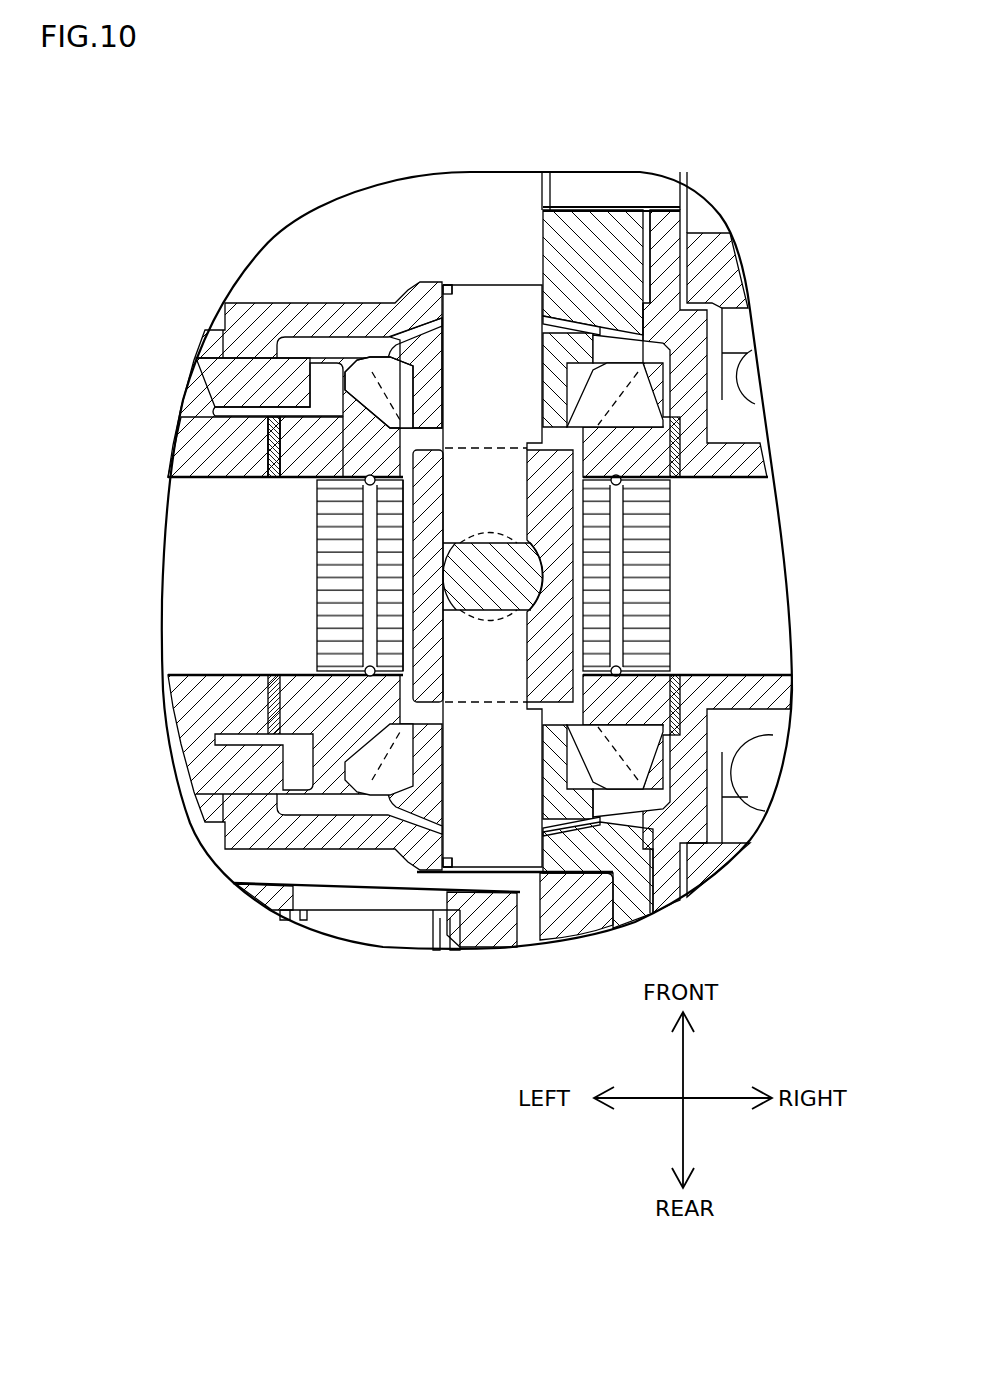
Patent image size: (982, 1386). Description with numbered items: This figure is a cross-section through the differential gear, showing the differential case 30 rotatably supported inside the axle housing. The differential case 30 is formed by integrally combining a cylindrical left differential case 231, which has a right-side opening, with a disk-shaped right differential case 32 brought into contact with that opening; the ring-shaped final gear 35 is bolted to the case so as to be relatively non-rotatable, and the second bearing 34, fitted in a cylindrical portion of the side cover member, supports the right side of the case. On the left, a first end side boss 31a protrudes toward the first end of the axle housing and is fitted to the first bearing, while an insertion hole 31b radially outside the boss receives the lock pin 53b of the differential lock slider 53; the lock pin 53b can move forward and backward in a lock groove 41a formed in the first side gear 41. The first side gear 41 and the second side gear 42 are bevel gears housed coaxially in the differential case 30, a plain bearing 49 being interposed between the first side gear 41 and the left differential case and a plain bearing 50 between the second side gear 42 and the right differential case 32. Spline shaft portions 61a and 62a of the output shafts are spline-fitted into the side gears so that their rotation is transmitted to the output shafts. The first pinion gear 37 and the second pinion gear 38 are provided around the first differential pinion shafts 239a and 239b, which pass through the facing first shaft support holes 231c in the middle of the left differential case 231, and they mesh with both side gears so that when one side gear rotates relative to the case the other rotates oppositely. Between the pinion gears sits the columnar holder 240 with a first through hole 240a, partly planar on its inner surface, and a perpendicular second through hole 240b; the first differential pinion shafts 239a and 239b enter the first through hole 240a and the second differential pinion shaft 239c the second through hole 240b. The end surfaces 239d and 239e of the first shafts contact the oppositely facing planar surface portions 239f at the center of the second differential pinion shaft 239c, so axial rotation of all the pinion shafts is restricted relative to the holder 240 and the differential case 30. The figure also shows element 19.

The connector 19 is at (455, 937).
The differential case 30 is at (803, 232).
The first end side boss 31a is at (190, 438).
The insertion hole 31b is at (268, 357).
The right differential case 32 is at (673, 303).
The second bearing 34 is at (743, 823).
The final gear 35 is at (580, 907).
The first pinion gear 37 is at (423, 357).
The second pinion gear 38 is at (627, 843).
The first side gear 41 is at (325, 392).
The lock groove 41a is at (293, 747).
The second side gear 42 is at (647, 443).
The plain bearing 49 is at (272, 470).
The plain bearing 50 is at (676, 470).
The differential lock slider 53 is at (213, 390).
The lock pin 53b is at (298, 393).
The spline shaft portion 61a is at (213, 608).
The spline shaft portion 62a is at (752, 615).
The left differential case 231 is at (633, 267).
The first shaft support hole 231c is at (452, 292).
The first differential pinion shaft 239a is at (487, 314).
The first differential pinion shaft 239b is at (515, 845).
The second differential pinion shaft 239c is at (592, 578).
The end surface 239d is at (457, 543).
The end surface 239e is at (465, 612).
The planar surface portion 239f is at (518, 540).
The holder 240 is at (573, 593).
The first through hole 240a is at (443, 693).
The second through hole 240b is at (533, 587).